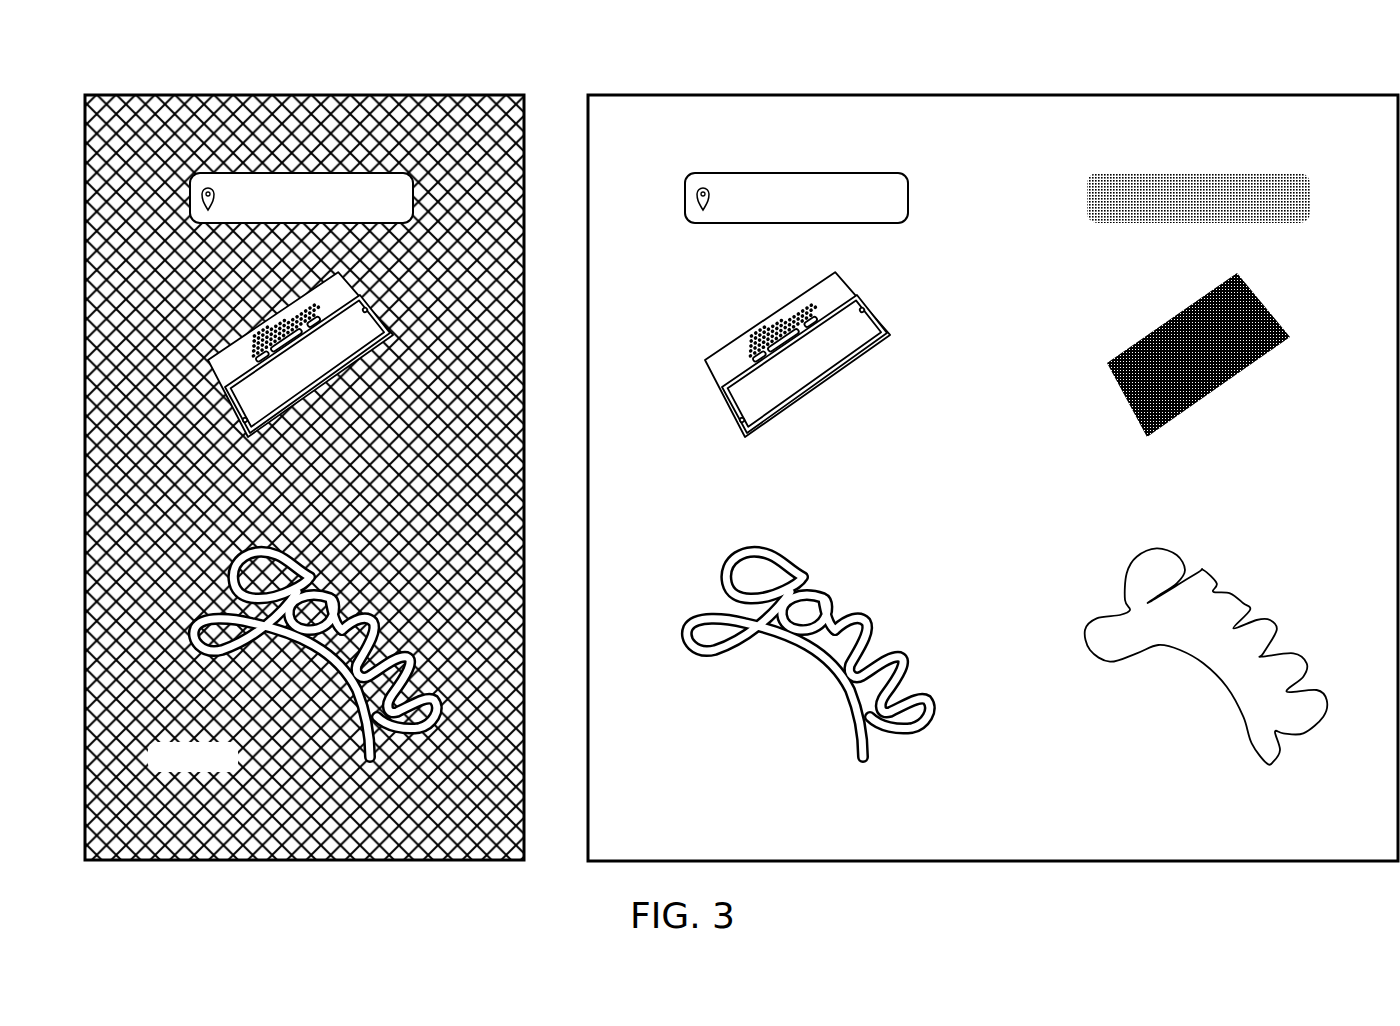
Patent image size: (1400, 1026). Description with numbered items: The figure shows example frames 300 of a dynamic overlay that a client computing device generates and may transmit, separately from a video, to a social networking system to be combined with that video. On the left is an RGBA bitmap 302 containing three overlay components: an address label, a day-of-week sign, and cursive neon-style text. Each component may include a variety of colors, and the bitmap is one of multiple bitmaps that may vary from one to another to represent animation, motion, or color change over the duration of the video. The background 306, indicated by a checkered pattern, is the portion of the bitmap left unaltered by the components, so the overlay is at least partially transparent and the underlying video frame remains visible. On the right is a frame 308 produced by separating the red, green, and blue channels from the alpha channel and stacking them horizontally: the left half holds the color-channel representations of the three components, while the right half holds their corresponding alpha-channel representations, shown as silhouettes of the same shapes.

The example frames 300 is at (128, 52).
The RGBA bitmap 302 is at (355, 95).
The background 306 is at (209, 770).
The frame 308 is at (862, 95).